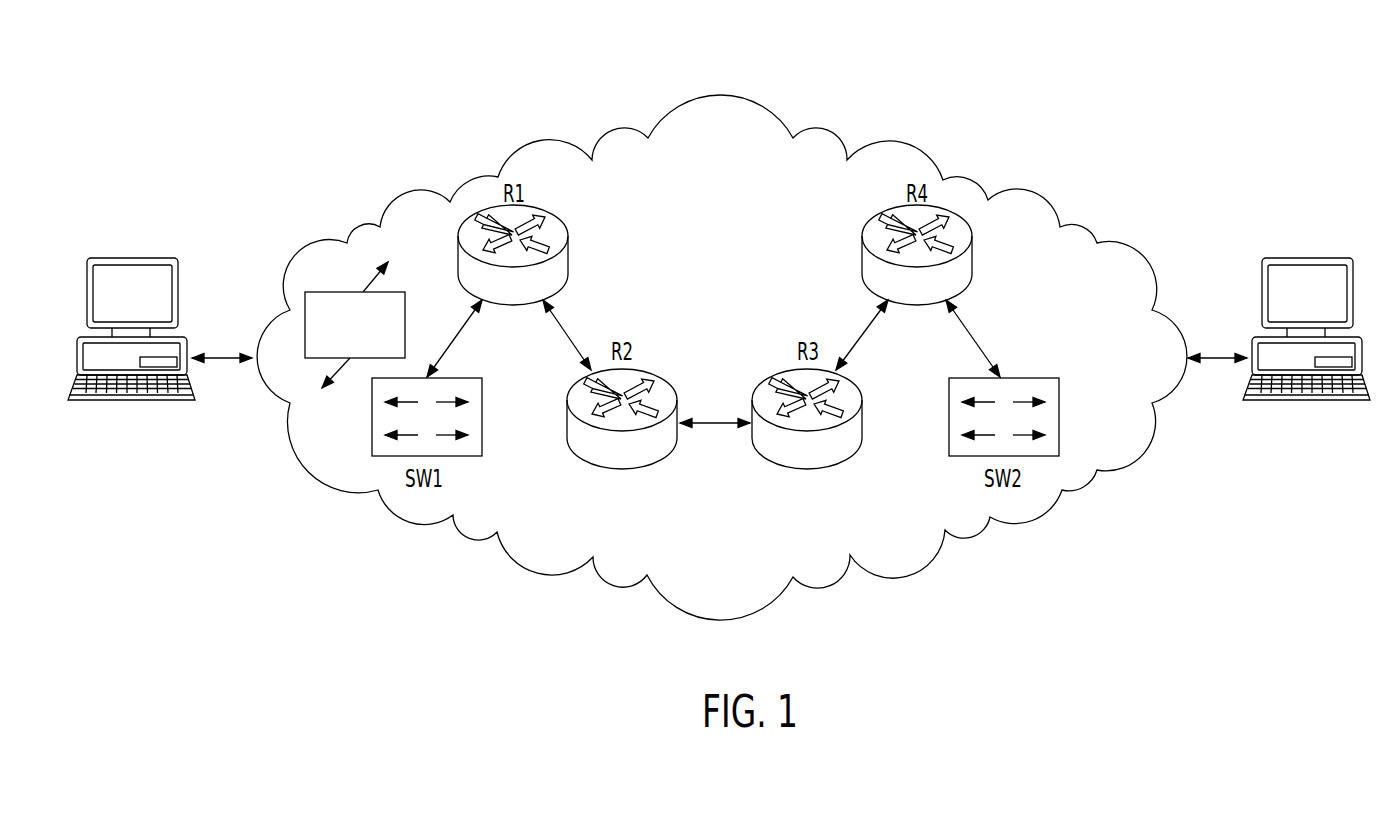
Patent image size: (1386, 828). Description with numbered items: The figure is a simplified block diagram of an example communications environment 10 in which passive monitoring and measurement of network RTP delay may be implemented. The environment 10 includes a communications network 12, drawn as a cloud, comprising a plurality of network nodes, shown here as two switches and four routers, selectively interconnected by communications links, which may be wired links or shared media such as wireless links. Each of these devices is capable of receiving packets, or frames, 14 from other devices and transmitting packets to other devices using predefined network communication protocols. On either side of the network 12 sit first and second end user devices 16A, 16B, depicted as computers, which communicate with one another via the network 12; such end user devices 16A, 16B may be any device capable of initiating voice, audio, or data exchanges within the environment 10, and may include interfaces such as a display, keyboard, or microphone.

The communications environment 10 is at (498, 100).
The communications network 12 is at (762, 105).
The packets 14 is at (322, 292).
The first end user device 16A is at (132, 258).
The second end user device 16B is at (1307, 258).